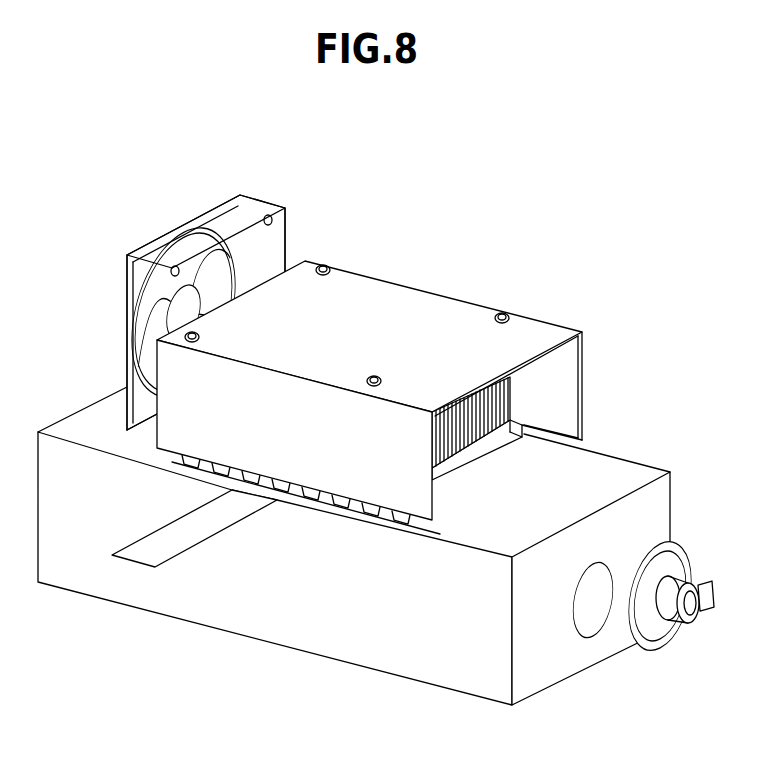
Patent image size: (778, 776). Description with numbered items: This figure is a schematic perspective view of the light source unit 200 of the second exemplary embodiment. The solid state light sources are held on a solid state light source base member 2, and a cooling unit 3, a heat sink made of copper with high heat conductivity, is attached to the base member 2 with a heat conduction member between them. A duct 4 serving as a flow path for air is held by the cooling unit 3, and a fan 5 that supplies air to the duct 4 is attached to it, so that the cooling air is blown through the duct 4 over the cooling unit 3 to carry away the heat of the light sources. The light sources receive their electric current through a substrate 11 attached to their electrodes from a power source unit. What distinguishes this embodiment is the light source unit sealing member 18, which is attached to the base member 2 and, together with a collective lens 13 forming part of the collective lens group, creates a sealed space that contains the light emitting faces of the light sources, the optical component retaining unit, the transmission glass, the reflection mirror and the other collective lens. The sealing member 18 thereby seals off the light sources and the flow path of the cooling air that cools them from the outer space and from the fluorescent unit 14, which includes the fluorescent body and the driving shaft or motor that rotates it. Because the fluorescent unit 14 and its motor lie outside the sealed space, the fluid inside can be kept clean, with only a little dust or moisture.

The light source unit 200 is at (85, 177).
The solid state light source base member 2 is at (518, 460).
The cooling unit 3 is at (488, 403).
The duct 4 is at (388, 300).
The fan 5 is at (127, 338).
The substrate 11 is at (172, 545).
The collective lens 13 is at (592, 622).
The fluorescent unit 14 is at (653, 630).
The light source unit sealing member 18 is at (88, 582).